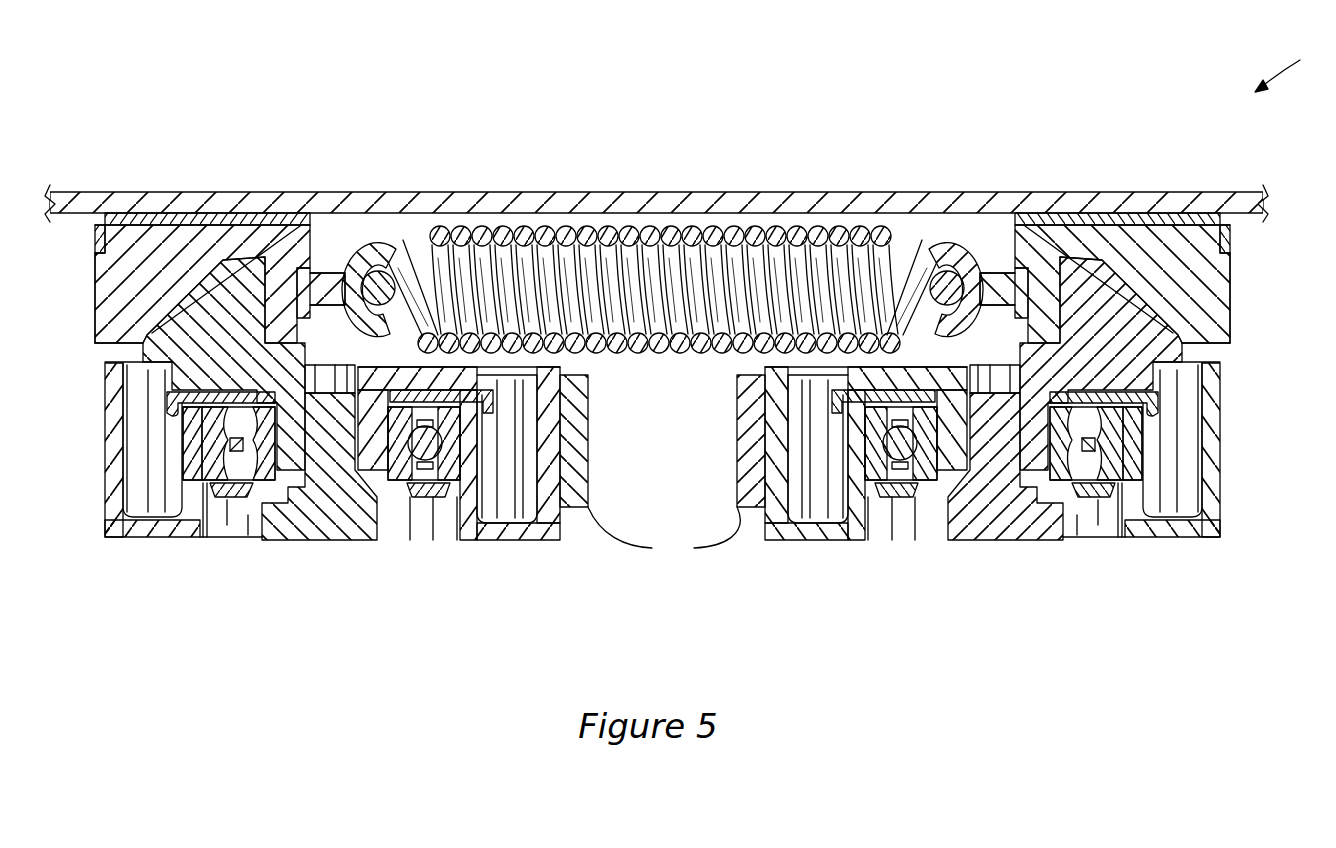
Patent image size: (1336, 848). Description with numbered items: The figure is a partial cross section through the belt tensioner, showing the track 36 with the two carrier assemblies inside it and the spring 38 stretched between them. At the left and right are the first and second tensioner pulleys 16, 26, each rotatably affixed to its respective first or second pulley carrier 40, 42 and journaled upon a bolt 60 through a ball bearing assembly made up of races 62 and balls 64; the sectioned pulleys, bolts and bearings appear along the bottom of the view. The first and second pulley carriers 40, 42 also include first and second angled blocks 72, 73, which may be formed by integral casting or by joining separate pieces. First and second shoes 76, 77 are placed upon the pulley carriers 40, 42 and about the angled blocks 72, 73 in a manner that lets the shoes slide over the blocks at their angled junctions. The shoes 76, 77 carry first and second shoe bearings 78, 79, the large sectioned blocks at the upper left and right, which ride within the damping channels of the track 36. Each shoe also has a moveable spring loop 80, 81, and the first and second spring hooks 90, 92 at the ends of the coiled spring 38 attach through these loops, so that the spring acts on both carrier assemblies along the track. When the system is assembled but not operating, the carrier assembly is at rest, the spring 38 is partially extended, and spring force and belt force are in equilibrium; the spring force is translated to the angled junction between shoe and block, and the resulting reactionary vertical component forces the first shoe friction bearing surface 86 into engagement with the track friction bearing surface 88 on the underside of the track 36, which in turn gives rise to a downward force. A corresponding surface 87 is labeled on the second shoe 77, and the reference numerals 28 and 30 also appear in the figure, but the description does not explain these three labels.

The first tensioner pulley 16 is at (110, 538).
The second tensioner pulley 26 is at (1215, 538).
The spring assembly 28 is at (1294, 63).
The central opening 30 is at (664, 535).
The track 36 is at (786, 192).
The spring 38 is at (650, 228).
The first pulley carrier 40 is at (300, 478).
The second pulley carrier 42 is at (1045, 478).
The bolt 60 is at (330, 542).
The races 62 is at (240, 497).
The balls 64 is at (428, 465).
The first angled block 72 is at (148, 352).
The second angled block 73 is at (1185, 354).
The first shoe 76 is at (93, 316).
The second shoe 77 is at (1232, 336).
The first shoe bearing 78 is at (93, 238).
The second shoe bearing 79 is at (1232, 250).
The first moveable spring loop 80 is at (325, 270).
The second moveable spring loop 81 is at (1003, 272).
The first shoe friction bearing surface 86 is at (158, 222).
The second guide strip 87 is at (1100, 222).
The track friction bearing surface 88 is at (172, 226).
The first spring hook 90 is at (396, 248).
The second spring hook 92 is at (928, 250).